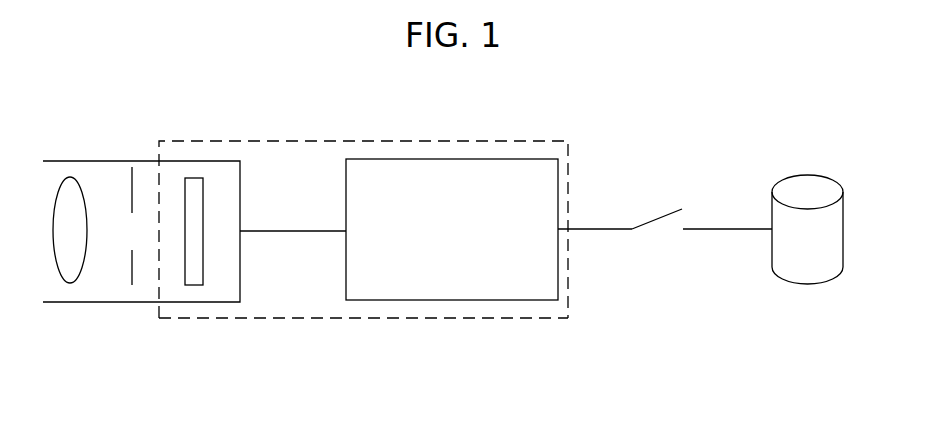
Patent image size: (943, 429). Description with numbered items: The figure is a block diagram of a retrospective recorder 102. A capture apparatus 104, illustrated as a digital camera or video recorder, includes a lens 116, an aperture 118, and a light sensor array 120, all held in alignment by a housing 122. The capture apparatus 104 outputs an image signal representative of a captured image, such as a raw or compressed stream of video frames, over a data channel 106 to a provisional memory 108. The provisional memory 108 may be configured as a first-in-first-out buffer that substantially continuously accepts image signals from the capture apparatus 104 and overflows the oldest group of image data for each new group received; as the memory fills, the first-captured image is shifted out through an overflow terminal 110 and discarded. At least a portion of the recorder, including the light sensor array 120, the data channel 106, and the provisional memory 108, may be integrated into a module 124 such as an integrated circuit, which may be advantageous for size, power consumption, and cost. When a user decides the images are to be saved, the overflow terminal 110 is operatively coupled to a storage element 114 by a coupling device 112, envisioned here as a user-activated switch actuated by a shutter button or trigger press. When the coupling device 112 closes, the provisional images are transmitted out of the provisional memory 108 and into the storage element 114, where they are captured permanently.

The retrospective recorder 102 is at (587, 110).
The capture apparatus 104 is at (145, 255).
The data channel 106 is at (292, 231).
The provisional memory 108 is at (472, 269).
The overflow terminal 110 is at (589, 226).
The coupling device 112 is at (660, 217).
The storage element 114 is at (803, 175).
The lens 116 is at (61, 170).
The aperture 118 is at (124, 170).
The light sensor array 120 is at (186, 174).
The housing 122 is at (243, 141).
The module 124 is at (543, 318).